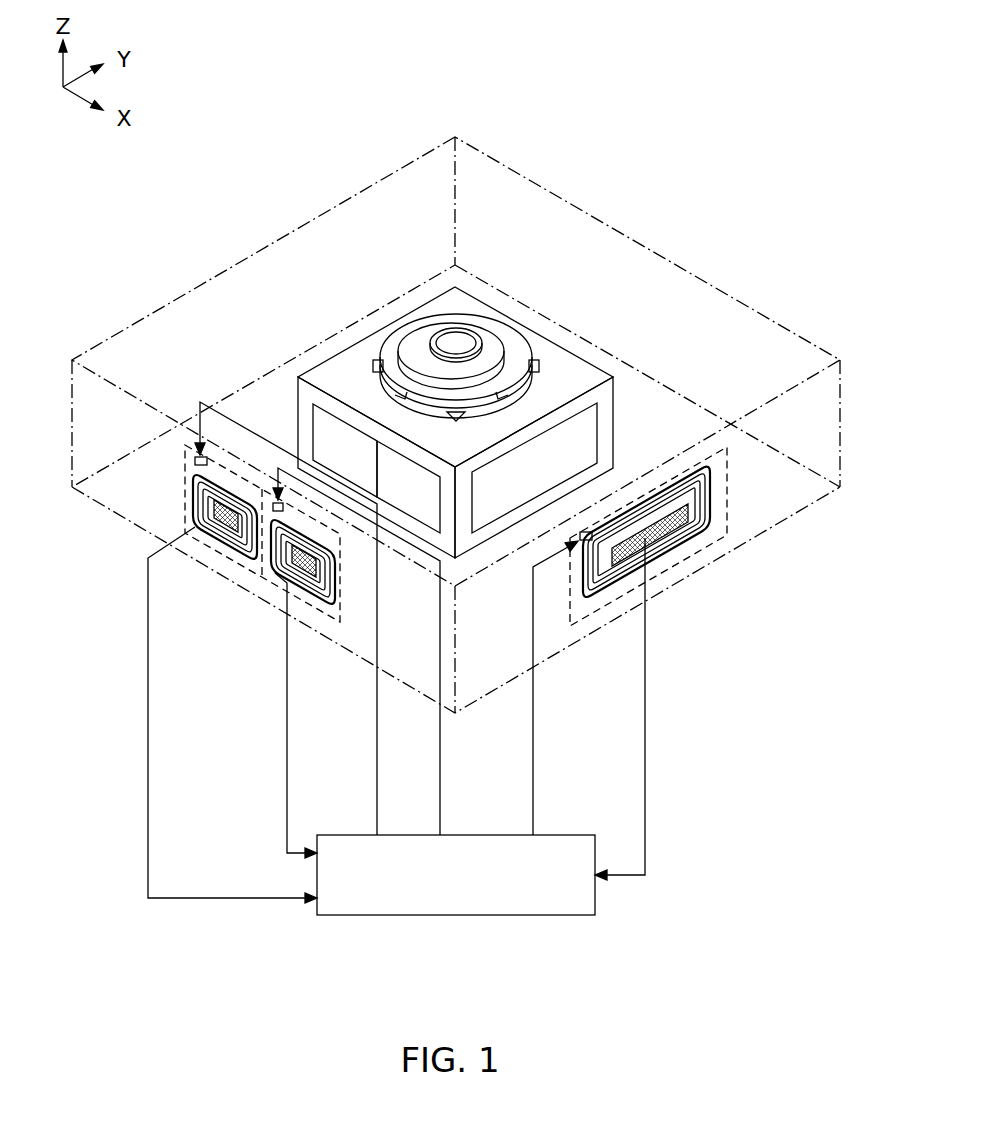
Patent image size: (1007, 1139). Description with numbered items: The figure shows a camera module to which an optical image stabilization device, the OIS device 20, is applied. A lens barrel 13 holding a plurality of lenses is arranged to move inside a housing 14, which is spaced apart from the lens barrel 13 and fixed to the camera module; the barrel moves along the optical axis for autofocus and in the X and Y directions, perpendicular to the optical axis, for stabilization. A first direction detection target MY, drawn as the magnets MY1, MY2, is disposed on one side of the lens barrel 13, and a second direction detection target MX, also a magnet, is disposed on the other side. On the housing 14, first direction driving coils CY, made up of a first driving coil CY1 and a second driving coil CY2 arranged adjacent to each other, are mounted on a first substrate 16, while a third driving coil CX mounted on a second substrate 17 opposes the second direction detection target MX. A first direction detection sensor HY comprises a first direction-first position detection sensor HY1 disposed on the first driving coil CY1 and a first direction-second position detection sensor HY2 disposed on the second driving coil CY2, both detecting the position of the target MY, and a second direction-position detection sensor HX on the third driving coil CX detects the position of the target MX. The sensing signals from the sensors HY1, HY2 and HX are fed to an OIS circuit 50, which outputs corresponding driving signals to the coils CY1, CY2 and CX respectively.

The OIS device 20 is at (206, 113).
The lens barrel 13 is at (483, 330).
The housing 14 is at (645, 234).
The second direction detection target MX is at (580, 443).
The first direction detection target MY is at (360, 310).
The first direction detection target portion MY1 is at (347, 443).
The first direction detection target portion MY2 is at (403, 473).
The first substrate 16 is at (182, 514).
The first direction detection sensor HY is at (295, 502).
The first direction-first position detection sensor HY1 is at (237, 488).
The first direction-second position detection sensor HY2 is at (303, 540).
The first direction driving coils CY is at (241, 689).
The first driving coil CY1 is at (228, 547).
The second driving coil CY2 is at (277, 575).
The second substrate 17 is at (630, 588).
The third driving coil CX is at (663, 562).
The second direction-position detection sensor HX is at (703, 537).
The OIS circuit 50 is at (455, 915).